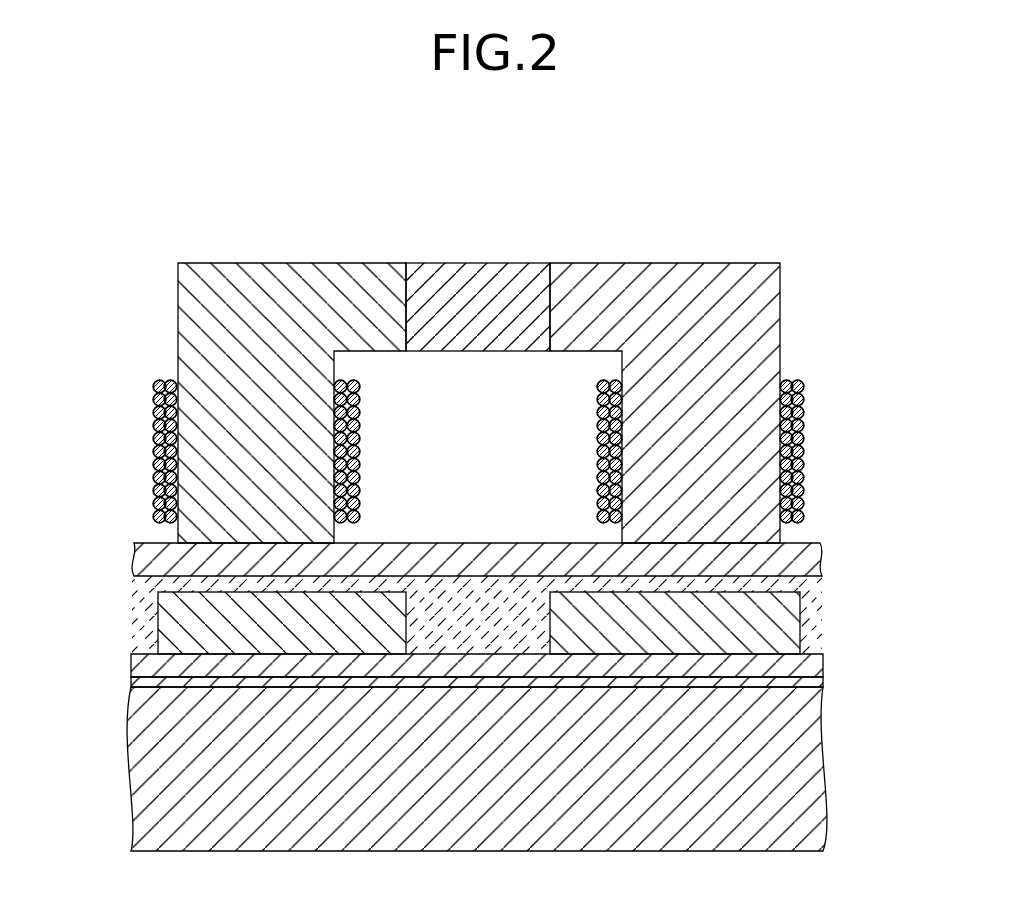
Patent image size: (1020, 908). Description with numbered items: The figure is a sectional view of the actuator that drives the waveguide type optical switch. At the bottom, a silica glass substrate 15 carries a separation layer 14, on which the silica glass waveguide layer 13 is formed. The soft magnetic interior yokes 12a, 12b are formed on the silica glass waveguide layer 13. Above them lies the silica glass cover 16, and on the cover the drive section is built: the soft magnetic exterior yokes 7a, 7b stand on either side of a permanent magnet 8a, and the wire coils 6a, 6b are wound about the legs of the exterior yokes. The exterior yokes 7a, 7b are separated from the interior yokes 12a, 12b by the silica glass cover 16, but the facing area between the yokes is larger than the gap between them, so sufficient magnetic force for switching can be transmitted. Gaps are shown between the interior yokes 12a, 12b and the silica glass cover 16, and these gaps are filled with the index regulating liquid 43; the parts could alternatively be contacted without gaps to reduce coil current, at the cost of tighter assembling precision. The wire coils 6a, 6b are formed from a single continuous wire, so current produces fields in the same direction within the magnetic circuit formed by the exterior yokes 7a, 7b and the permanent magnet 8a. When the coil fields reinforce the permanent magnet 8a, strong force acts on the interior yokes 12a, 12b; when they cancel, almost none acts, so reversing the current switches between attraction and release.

The soft magnetic exterior yoke 7a is at (285, 263).
The permanent magnet 8a is at (475, 263).
The soft magnetic exterior yoke 7b is at (665, 263).
The wire coil 6a is at (361, 430).
The wire coil 6b is at (599, 447).
The silica glass cover 16 is at (813, 547).
The index regulating liquid 43 is at (812, 595).
The soft magnetic interior yoke 12a is at (172, 627).
The soft magnetic interior yoke 12b is at (767, 626).
The silica glass waveguide layer 13 is at (805, 668).
The separation layer 14 is at (805, 684).
The silica glass substrate 15 is at (798, 778).